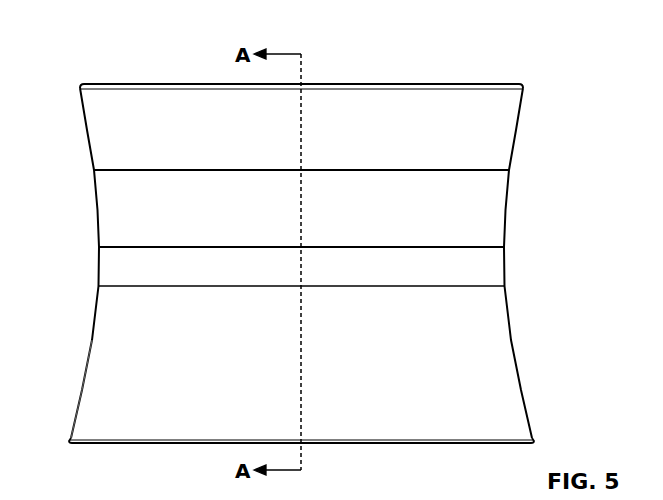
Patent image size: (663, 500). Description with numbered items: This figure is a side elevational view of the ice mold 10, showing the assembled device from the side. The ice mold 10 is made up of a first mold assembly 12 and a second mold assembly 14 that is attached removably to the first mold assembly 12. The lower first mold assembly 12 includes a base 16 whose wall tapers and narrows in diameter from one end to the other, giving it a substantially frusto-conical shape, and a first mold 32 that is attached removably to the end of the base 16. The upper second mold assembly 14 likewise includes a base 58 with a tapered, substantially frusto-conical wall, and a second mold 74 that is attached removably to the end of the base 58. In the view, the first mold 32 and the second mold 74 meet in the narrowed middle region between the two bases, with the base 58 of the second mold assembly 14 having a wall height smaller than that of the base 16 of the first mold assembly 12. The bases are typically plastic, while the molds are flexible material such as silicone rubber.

The ice mold 10 is at (519, 57).
The first mold assembly 12 is at (90, 300).
The second mold assembly 14 is at (82, 156).
The base 16 is at (93, 391).
The first mold 32 is at (106, 255).
The base 58 is at (94, 111).
The second mold 74 is at (107, 212).